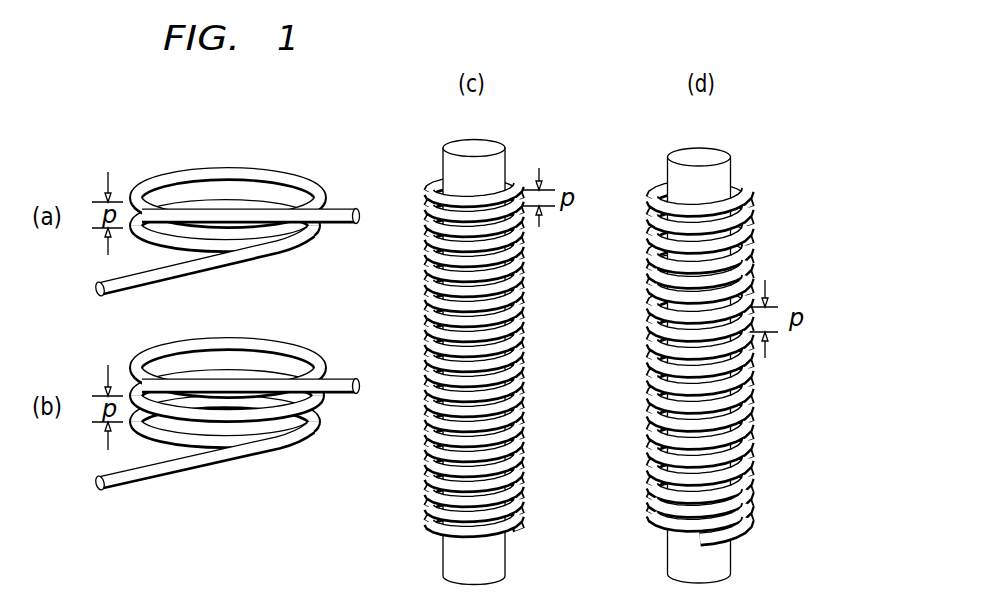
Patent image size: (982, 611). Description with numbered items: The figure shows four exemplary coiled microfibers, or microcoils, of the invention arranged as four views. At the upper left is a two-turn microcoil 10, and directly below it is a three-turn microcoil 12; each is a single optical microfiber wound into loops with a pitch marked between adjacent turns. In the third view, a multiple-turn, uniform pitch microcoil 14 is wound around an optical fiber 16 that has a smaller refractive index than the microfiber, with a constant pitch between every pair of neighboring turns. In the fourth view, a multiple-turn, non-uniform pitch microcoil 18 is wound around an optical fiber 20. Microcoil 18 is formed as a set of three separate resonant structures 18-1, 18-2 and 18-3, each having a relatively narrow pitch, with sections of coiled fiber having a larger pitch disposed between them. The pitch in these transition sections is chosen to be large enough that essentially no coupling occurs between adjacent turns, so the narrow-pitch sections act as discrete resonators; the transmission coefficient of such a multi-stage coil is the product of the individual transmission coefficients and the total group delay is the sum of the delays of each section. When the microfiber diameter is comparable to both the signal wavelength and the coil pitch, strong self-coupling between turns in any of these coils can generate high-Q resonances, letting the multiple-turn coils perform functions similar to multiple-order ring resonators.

The two-turn microcoil 10 is at (216, 166).
The three-turn microcoil 12 is at (216, 336).
The multiple-turn, uniform pitch microcoil 14 is at (482, 345).
The optical fiber 16 is at (449, 143).
The multiple-turn, non-uniform pitch microcoil 18 is at (747, 347).
The resonant structure 18-1 is at (748, 273).
The resonant structure 18-2 is at (749, 398).
The resonant structure 18-3 is at (749, 506).
The optical fiber 20 is at (718, 561).